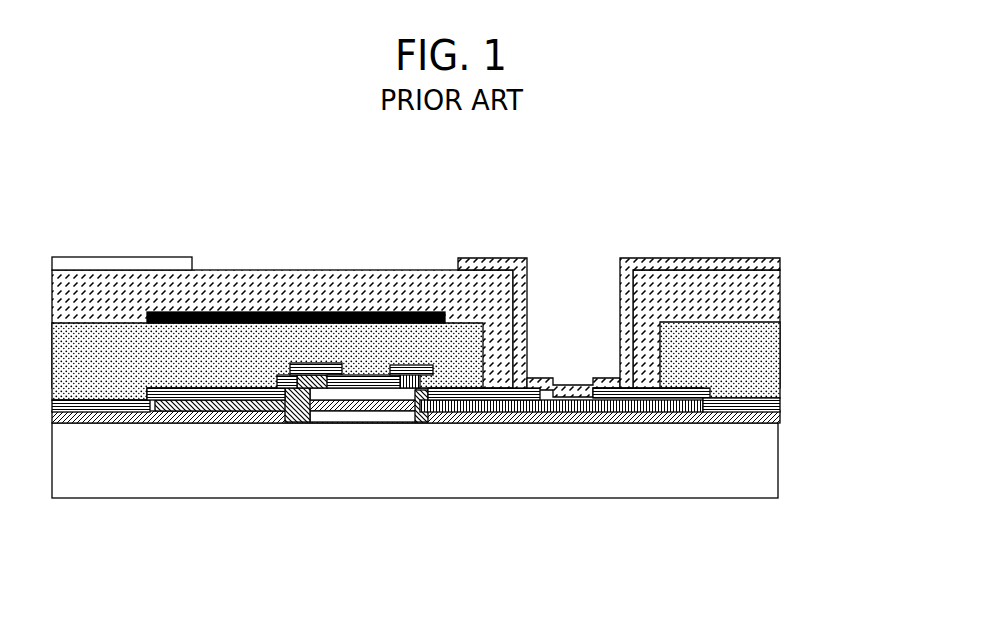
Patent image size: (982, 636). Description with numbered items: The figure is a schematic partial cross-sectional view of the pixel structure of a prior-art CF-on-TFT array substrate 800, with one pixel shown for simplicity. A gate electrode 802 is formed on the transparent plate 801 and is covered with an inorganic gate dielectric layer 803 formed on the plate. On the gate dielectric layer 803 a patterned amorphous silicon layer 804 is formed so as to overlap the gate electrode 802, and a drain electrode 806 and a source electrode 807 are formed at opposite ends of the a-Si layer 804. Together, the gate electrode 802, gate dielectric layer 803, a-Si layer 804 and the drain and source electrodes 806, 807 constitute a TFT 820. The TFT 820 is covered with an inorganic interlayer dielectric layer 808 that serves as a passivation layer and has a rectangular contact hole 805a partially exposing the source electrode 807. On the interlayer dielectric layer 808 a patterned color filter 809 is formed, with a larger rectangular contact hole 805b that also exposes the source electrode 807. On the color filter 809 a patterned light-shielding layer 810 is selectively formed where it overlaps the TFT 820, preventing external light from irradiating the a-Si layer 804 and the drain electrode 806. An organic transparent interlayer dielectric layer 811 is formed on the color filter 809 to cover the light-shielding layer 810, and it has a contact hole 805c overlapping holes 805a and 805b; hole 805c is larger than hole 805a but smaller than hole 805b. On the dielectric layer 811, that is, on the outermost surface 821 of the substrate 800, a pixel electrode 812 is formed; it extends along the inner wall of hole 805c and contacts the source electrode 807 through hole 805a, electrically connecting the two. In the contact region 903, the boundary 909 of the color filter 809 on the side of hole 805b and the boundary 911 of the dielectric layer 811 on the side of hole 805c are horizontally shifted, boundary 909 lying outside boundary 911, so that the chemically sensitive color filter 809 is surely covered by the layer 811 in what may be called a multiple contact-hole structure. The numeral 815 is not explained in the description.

The TFT array substrate 800 is at (710, 528).
The transparent plate 801 is at (768, 486).
The gate electrode 802 is at (347, 427).
The gate dielectric layer 803 is at (777, 425).
The amorphous silicon layer 804 is at (383, 393).
The contact hole 805a is at (583, 383).
The contact hole 805b is at (433, 270).
The contact hole 805c is at (603, 266).
The drain electrode 806 is at (212, 423).
The source electrode 807 is at (672, 422).
The interlayer dielectric layer 808 is at (770, 399).
The color filter 809 is at (770, 348).
The light-shielding layer 810 is at (302, 272).
The organic interlayer dielectric layer 811 is at (770, 291).
The pixel electrode 812 is at (753, 259).
The contact layer 815 is at (550, 423).
The TFT 820 is at (377, 435).
The outermost surface 821 is at (263, 270).
The contact region 903 is at (582, 242).
The boundary of the color filter 909 is at (697, 358).
The boundary of the dielectric layer 911 is at (633, 307).